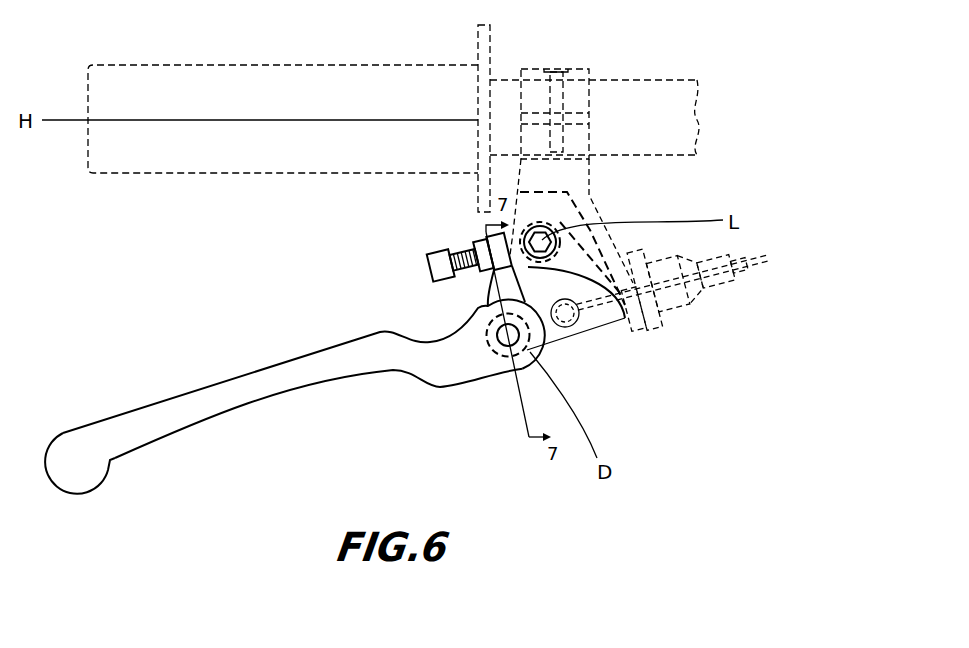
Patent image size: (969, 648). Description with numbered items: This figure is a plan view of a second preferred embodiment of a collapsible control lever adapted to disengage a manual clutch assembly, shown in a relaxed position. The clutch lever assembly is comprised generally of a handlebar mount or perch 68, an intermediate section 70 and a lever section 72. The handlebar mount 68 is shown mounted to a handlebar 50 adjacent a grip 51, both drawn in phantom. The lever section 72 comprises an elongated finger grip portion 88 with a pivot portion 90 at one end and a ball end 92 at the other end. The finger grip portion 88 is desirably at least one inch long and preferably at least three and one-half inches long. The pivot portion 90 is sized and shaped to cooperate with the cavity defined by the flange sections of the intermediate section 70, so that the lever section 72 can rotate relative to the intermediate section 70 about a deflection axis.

The handlebar 50 is at (703, 15).
The handlebar grip 51 is at (180, 232).
The handlebar mount 68 is at (688, 190).
The intermediate section 70 is at (643, 400).
The lever section 72 is at (240, 325).
The finger grip portion 88 is at (223, 497).
The pivot portion 90 is at (437, 432).
The ball end 92 is at (118, 540).